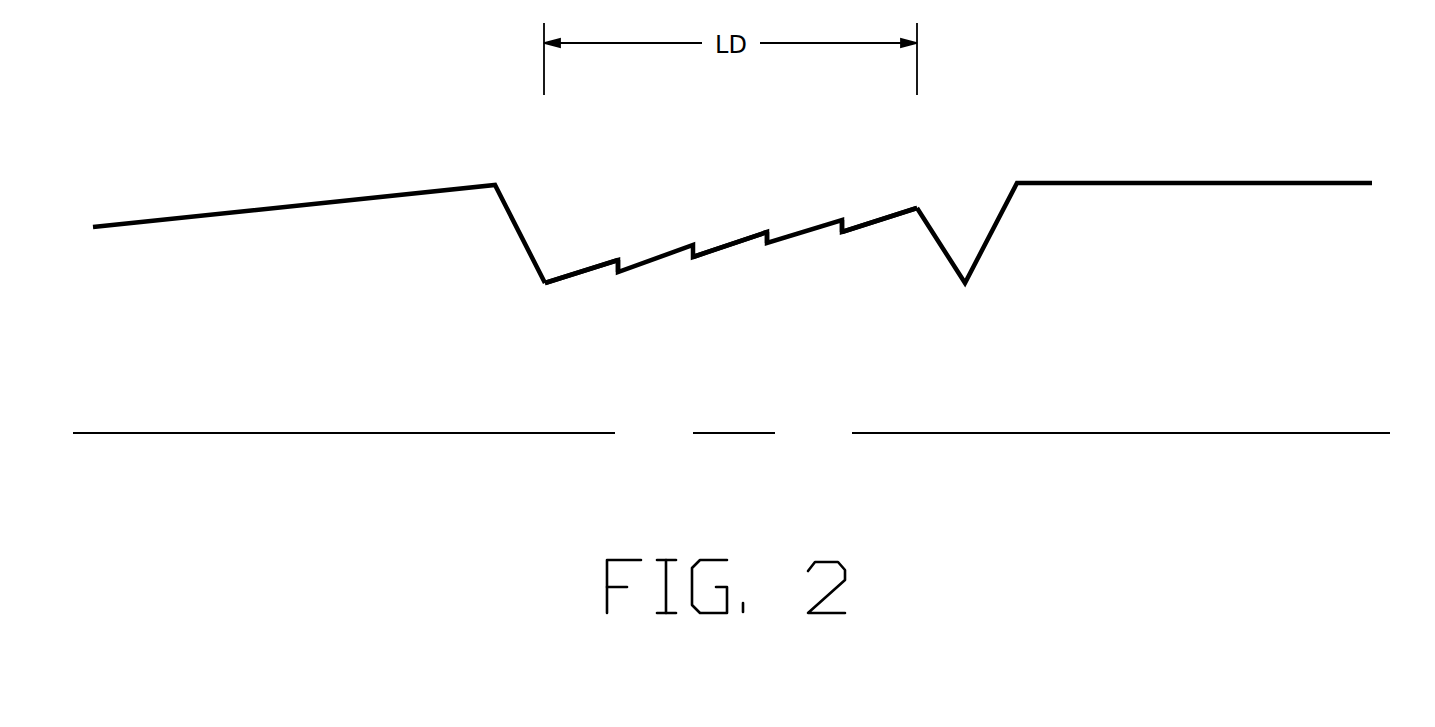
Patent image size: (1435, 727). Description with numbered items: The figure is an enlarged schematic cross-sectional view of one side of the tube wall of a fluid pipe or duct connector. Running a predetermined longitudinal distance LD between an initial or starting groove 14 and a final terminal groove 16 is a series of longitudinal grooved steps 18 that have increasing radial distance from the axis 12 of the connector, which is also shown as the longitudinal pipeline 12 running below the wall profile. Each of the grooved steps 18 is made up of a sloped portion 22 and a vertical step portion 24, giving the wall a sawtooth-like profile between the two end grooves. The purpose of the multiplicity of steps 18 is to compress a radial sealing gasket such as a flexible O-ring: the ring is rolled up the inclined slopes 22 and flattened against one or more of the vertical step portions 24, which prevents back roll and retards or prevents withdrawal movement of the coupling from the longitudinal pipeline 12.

The axis 12 is at (743, 375).
The initial groove 14 is at (319, 244).
The final terminal groove 16 is at (1144, 202).
The longitudinal grooved steps 18 is at (718, 218).
The sloped portions 22 is at (708, 265).
The vertical step portions 24 is at (755, 267).